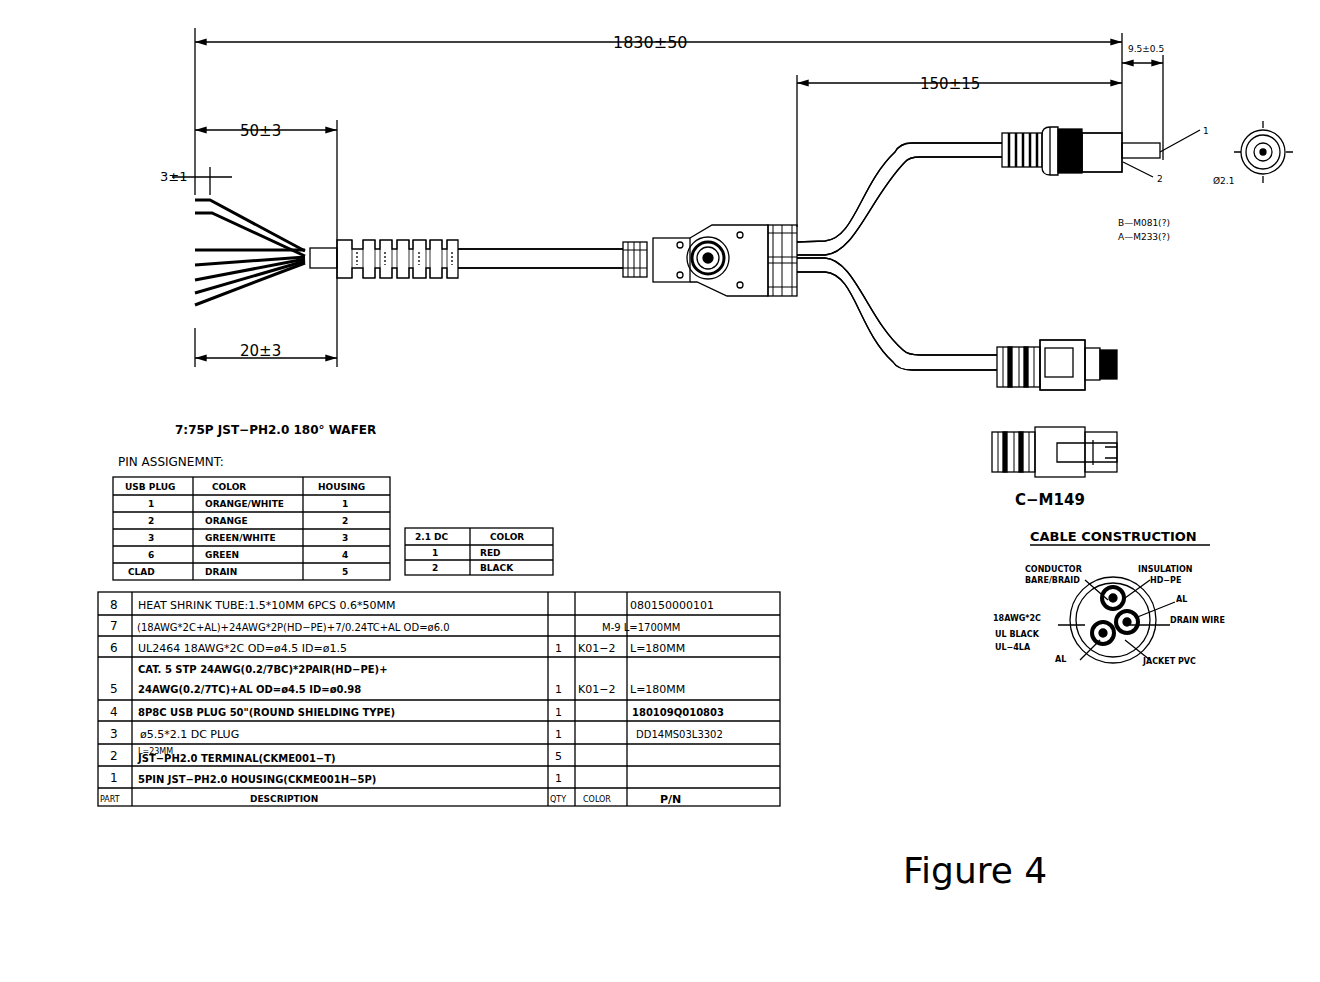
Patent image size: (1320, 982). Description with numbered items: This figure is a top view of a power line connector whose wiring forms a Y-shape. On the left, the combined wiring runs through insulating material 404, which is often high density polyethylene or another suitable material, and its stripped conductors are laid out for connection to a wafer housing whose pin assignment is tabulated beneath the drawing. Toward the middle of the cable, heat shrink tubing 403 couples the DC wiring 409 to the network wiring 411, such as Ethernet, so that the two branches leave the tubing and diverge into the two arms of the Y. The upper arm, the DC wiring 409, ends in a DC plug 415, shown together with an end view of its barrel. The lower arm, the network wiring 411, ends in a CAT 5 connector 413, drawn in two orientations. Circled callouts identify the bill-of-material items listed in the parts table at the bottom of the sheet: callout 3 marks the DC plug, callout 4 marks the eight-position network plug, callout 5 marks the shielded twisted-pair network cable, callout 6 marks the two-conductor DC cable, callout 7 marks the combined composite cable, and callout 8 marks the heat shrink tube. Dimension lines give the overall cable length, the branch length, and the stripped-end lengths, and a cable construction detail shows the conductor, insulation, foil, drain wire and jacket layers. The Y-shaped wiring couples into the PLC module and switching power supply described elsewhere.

The heat shrink tubing 403 is at (730, 285).
The insulating material 404 is at (496, 245).
The DC wiring 409 is at (873, 203).
The network wiring 411 is at (878, 328).
The CAT 5 connector 413 is at (1035, 345).
The DC plug 415 is at (1092, 160).
The DC plug item 3 is at (1100, 165).
The 8P8C plug item 4 is at (1000, 383).
The CAT5 STP cable item 5 is at (910, 365).
The UL2464 18AWG cable item 6 is at (258, 280).
The composite cable item 7 is at (530, 260).
The heat shrink tube item 8 is at (667, 270).